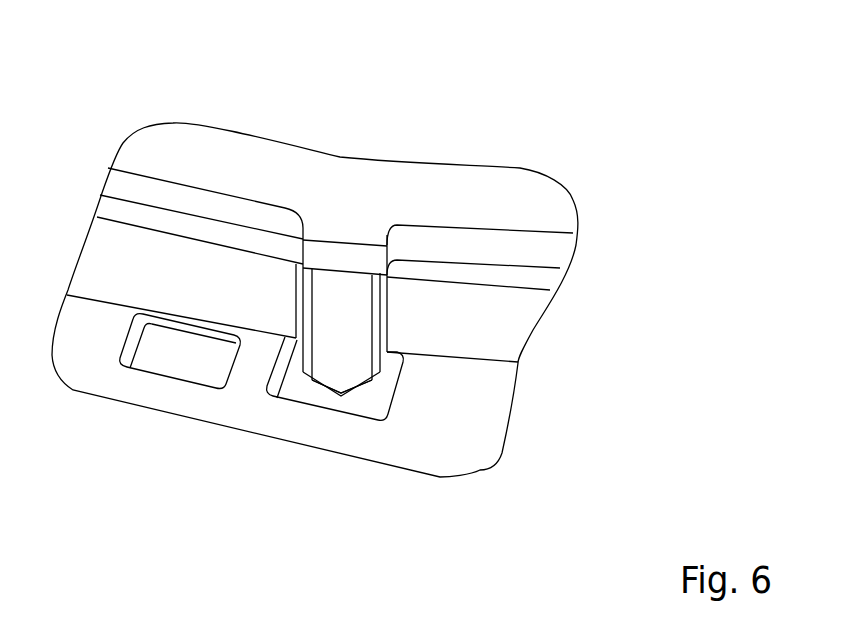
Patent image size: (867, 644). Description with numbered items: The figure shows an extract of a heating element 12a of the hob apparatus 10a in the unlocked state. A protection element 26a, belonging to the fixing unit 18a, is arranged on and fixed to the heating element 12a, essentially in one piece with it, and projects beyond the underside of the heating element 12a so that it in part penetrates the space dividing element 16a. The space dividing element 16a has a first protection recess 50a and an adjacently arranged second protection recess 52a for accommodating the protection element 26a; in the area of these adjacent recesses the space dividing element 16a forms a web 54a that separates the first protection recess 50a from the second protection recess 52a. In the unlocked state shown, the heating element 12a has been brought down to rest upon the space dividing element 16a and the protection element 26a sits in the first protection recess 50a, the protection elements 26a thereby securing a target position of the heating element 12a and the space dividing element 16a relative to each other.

The hob apparatus 10a is at (580, 108).
The heating element 12a is at (513, 198).
The space dividing element 16a is at (480, 419).
The fixing unit 18a is at (375, 220).
The protection element 26a is at (343, 293).
The first protection recess 50a is at (323, 408).
The second protection recess 52a is at (186, 378).
The web 54a is at (248, 382).